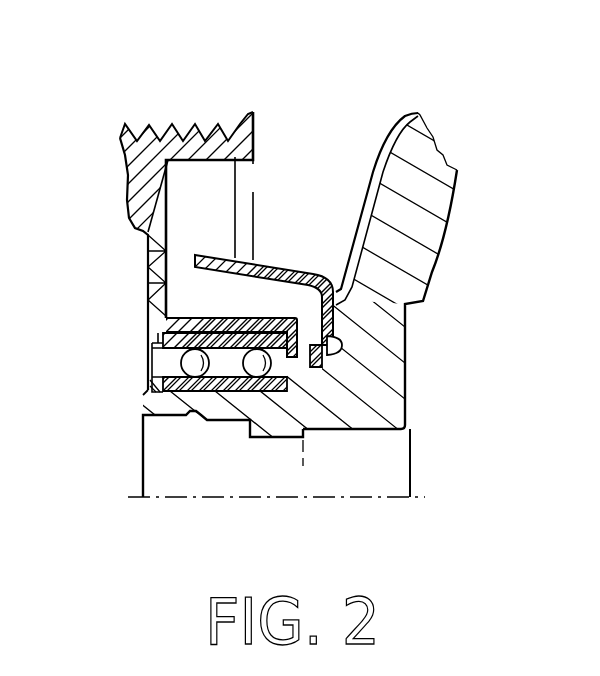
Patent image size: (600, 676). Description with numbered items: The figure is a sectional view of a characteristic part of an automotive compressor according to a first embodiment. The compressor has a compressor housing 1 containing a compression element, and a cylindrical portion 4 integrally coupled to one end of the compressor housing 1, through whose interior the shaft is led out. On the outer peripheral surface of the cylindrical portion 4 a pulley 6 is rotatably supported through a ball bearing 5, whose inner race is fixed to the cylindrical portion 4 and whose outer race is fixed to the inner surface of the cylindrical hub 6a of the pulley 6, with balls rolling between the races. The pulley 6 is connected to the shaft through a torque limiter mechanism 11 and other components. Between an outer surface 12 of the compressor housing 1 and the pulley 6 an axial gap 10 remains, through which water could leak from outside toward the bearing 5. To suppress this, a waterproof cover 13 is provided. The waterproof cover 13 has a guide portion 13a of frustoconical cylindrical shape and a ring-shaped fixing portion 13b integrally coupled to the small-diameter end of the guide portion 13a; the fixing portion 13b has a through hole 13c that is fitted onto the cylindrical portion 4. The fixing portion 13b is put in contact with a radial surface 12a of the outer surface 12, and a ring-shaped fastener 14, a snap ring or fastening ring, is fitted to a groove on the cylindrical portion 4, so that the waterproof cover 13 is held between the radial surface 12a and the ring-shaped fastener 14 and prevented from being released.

The compressor housing 1 is at (401, 147).
The cylindrical portion 4 is at (278, 423).
The ball bearing 5 is at (141, 362).
The pulley 6 is at (243, 229).
The cylindrical hub 6a is at (197, 318).
The axial gap 10 is at (338, 320).
The torque limiter mechanism 11 is at (147, 276).
The outer surface 12 is at (416, 209).
The radial surface 12a is at (335, 293).
The waterproof cover 13 is at (312, 278).
The guide portion 13a is at (223, 255).
The fixing portion 13b is at (331, 313).
The through hole 13c is at (336, 362).
The ring-shaped fastener 14 is at (314, 369).